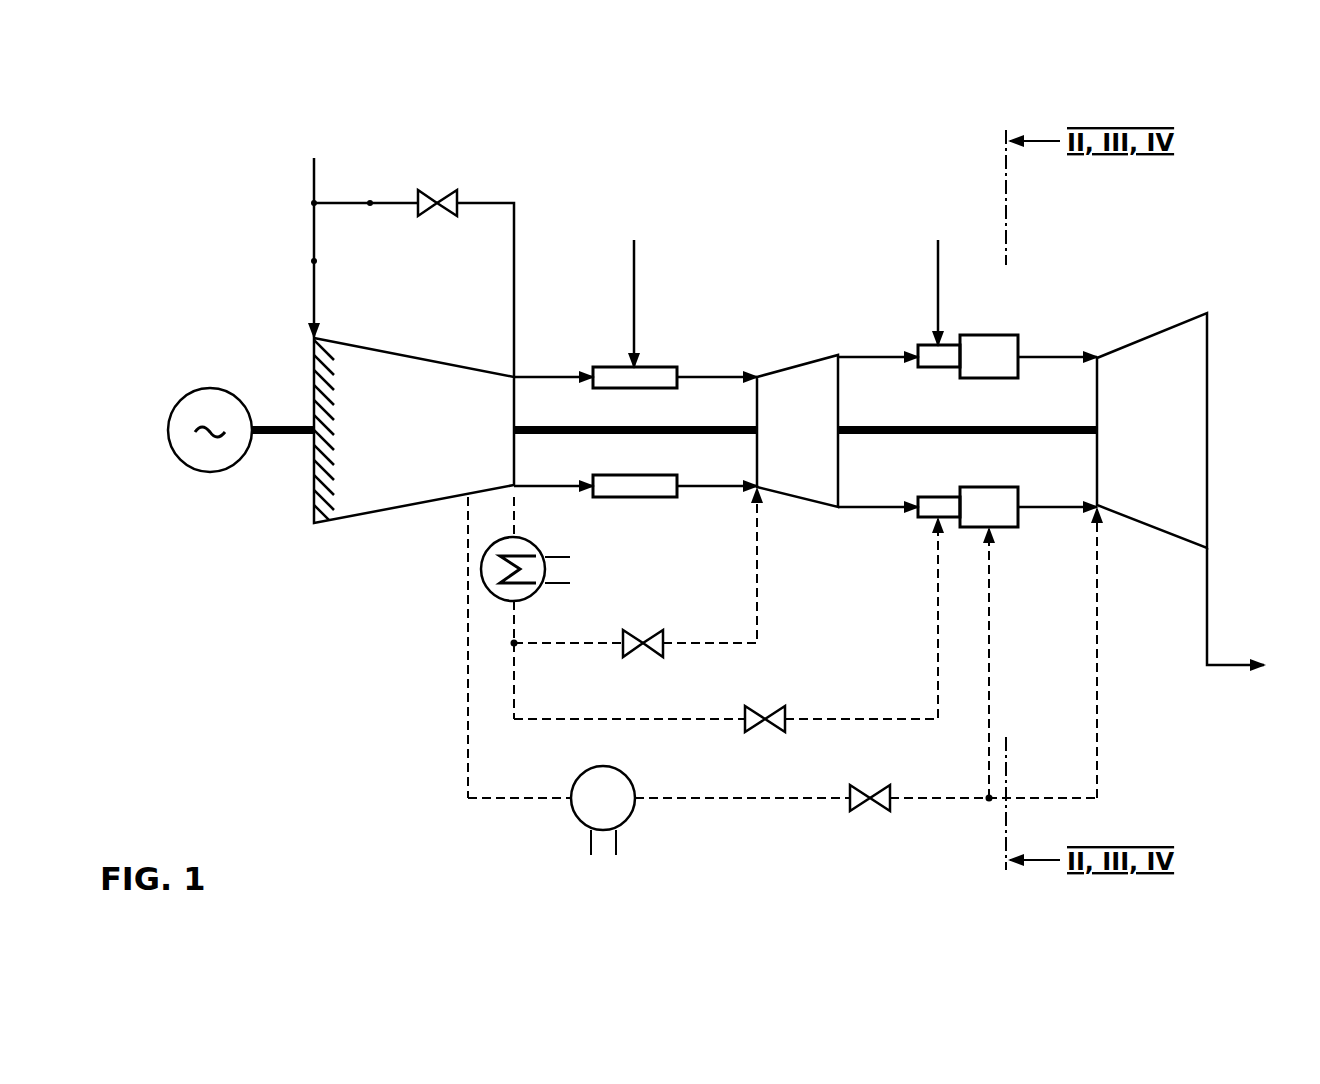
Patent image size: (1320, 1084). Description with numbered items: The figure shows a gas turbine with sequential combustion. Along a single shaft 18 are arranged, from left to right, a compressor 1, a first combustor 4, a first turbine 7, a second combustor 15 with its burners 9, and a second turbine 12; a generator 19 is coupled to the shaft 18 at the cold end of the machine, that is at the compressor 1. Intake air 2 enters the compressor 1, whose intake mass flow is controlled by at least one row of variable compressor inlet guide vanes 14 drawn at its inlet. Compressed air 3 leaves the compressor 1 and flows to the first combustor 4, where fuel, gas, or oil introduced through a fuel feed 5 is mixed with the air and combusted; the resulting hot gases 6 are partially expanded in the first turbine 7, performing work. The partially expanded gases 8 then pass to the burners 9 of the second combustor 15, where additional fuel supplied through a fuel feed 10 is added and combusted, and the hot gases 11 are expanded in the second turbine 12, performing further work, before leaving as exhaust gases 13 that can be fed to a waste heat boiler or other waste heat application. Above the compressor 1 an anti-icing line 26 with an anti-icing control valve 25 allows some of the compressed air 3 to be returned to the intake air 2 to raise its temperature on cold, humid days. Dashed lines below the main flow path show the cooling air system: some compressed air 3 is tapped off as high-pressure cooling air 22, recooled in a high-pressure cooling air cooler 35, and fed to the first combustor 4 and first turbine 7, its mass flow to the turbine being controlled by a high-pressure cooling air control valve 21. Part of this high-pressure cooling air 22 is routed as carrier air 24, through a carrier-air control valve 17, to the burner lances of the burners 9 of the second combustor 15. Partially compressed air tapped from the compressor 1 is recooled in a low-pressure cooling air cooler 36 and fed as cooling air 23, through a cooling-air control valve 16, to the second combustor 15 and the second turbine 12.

The compressor 1 is at (414, 430).
The intake air 2 is at (314, 261).
The compressed air 3 is at (553, 489).
The first combustor 4 is at (615, 377).
The fuel feed 5 is at (634, 288).
The hot gases 6 is at (717, 485).
The first turbine 7 is at (797, 431).
The partially expanded gases 8 is at (872, 507).
The burners 9 is at (935, 357).
The fuel feed 10 is at (938, 276).
The hot gases 11 is at (1050, 507).
The second turbine 12 is at (1152, 430).
The exhaust gases 13 is at (1256, 614).
The variable compressor inlet guide vanes 14 is at (328, 410).
The second combustor 15 is at (997, 357).
The cooling-air control valve 16 is at (870, 805).
The carrier-air control valve 17 is at (765, 745).
The shaft 18 is at (280, 437).
The generator 19 is at (210, 452).
The high-pressure cooling air control valve 21 is at (643, 652).
The high-pressure cooling air 22 is at (514, 621).
The cooling air 23 is at (989, 668).
The carrier air 24 is at (893, 719).
The anti-icing control valve 25 is at (437, 203).
The anti-icing line 26 is at (370, 203).
The high-pressure cooling air cooler 35 is at (497, 569).
The low-pressure cooling air cooler 36 is at (582, 802).